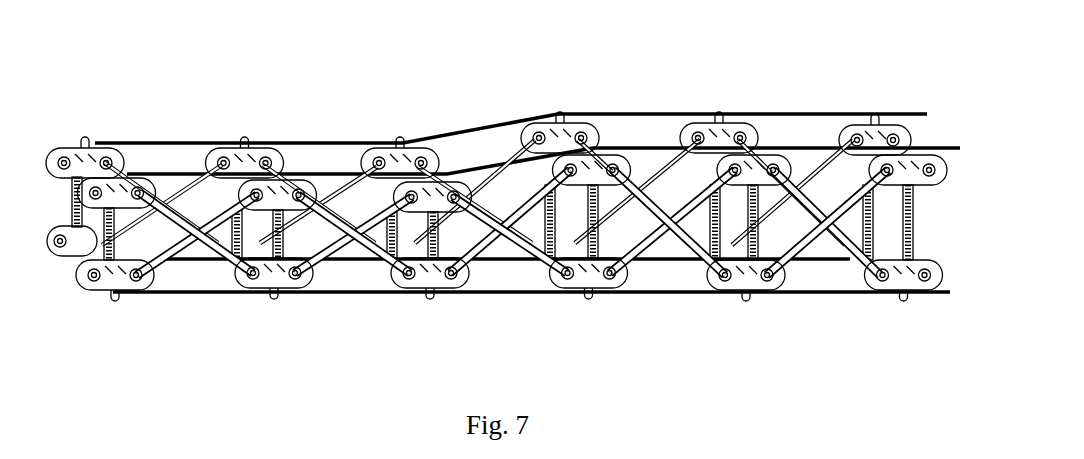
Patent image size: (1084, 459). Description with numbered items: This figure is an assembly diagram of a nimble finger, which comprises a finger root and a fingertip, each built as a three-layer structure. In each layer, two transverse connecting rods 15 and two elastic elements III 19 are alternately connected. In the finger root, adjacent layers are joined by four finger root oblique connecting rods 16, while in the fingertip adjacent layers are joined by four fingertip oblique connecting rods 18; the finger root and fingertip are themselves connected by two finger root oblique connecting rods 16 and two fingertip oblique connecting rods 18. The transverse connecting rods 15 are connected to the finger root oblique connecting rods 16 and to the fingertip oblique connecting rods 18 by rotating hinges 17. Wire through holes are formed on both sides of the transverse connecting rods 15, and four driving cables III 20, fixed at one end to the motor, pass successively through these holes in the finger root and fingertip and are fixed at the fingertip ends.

The transverse connecting rod 15 is at (872, 130).
The finger root oblique connecting rod 16 is at (838, 194).
The rotating hinge 17 is at (720, 165).
The fingertip oblique connecting rod 18 is at (373, 233).
The elastic element III 19 is at (92, 204).
The driving cable III 20 is at (204, 303).